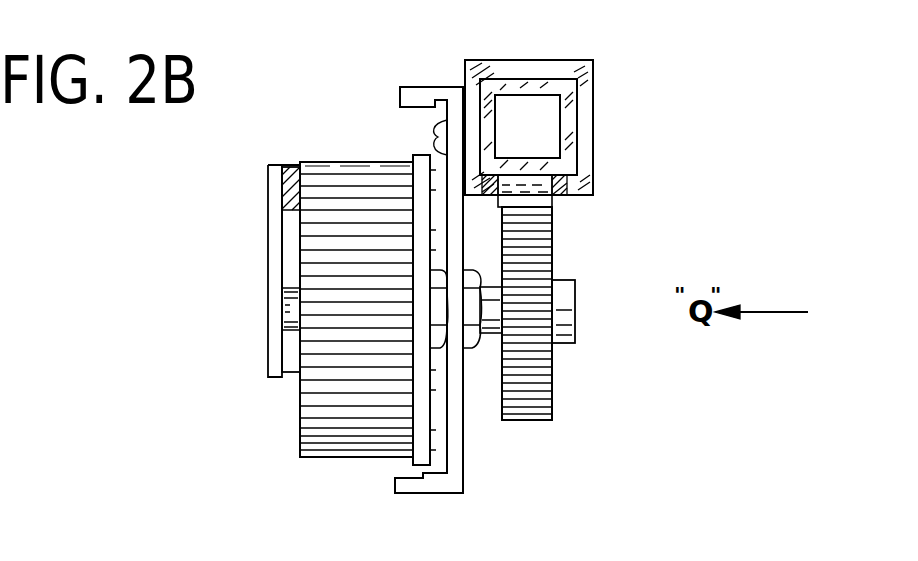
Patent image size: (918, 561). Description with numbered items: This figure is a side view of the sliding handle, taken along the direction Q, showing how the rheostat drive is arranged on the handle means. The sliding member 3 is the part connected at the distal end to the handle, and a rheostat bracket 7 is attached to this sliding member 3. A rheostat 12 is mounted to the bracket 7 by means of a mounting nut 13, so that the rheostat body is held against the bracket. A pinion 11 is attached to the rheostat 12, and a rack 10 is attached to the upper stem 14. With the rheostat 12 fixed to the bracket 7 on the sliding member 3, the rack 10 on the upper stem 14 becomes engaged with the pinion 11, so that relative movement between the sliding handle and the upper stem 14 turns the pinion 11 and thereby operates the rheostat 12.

The sliding member 3 is at (552, 60).
The rheostat bracket 7 is at (463, 477).
The rack 10 is at (547, 194).
The pinion 11 is at (552, 380).
The rheostat 12 is at (300, 411).
The mounting nut 13 is at (470, 348).
The upper stem 14 is at (571, 118).